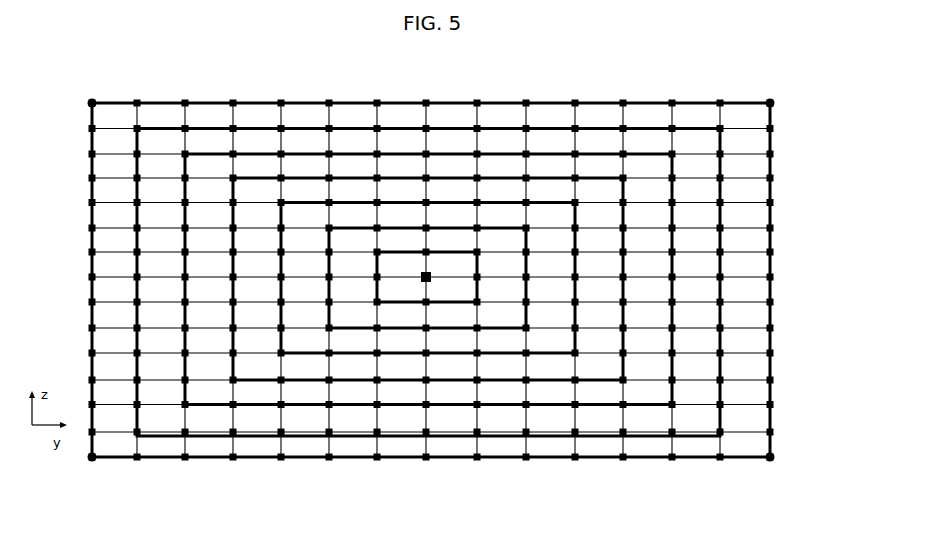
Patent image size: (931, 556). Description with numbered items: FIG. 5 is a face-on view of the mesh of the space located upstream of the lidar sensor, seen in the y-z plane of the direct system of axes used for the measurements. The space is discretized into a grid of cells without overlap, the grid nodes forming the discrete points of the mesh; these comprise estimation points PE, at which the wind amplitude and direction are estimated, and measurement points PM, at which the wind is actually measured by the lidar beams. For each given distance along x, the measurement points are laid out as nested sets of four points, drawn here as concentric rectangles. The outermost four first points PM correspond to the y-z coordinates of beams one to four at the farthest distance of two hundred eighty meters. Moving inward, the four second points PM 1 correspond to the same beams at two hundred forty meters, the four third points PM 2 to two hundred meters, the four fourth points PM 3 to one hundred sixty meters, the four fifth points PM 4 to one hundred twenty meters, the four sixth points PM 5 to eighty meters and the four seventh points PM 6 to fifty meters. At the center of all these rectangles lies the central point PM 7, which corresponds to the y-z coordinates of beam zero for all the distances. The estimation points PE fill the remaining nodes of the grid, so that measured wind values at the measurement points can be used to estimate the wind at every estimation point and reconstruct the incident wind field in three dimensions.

The estimation points PE is at (638, 100).
The measurement points PM is at (777, 466).
The second points PM 1 is at (707, 436).
The third points PM 2 is at (664, 405).
The fourth points PM 3 is at (638, 382).
The fifth points PM 4 is at (592, 355).
The sixth points PM 5 is at (540, 328).
The seventh points PM 6 is at (379, 314).
The central point PM 7 is at (419, 277).